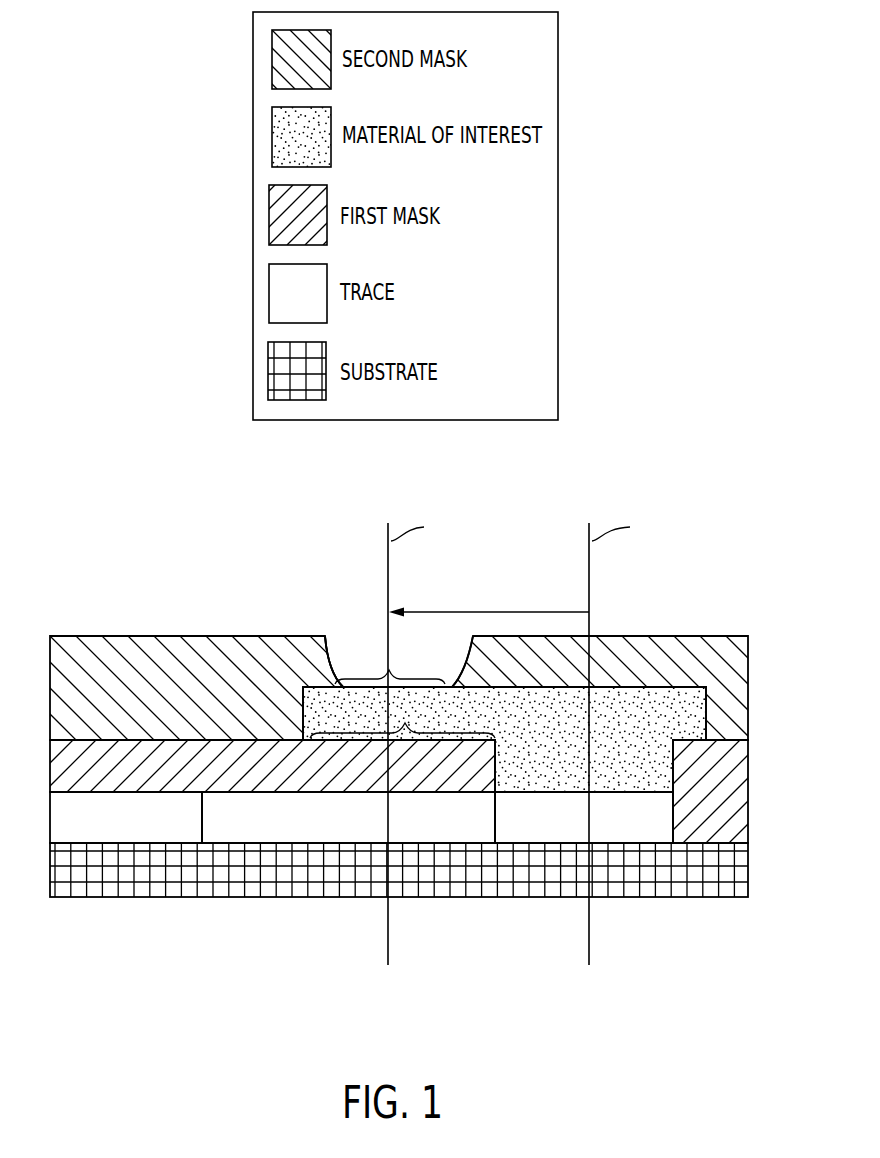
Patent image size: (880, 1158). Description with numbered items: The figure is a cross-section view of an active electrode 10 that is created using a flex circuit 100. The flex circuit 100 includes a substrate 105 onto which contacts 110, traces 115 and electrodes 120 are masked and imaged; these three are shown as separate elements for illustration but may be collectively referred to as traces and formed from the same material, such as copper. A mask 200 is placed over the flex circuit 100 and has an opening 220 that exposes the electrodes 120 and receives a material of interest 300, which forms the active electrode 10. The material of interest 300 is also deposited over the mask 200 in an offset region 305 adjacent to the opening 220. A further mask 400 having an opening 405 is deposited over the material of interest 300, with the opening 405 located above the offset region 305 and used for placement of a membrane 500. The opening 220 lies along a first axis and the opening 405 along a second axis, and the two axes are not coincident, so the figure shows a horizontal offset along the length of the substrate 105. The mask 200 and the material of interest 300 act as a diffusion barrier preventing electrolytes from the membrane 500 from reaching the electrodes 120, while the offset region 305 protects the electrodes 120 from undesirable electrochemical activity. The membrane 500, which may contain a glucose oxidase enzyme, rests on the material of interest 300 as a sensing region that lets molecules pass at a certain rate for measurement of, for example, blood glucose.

The active electrode 10 is at (126, 586).
The flex circuit 100 is at (124, 940).
The substrate 105 is at (410, 883).
The contacts 110 is at (140, 829).
The traces 115 is at (360, 830).
The electrodes 120 is at (604, 829).
The mask 200 is at (288, 780).
The opening 220 is at (604, 779).
The material of interest 300 is at (525, 722).
The offset region 305 is at (402, 715).
The mask 400 is at (203, 698).
The opening 405 is at (399, 661).
The membrane 500 is at (338, 648).